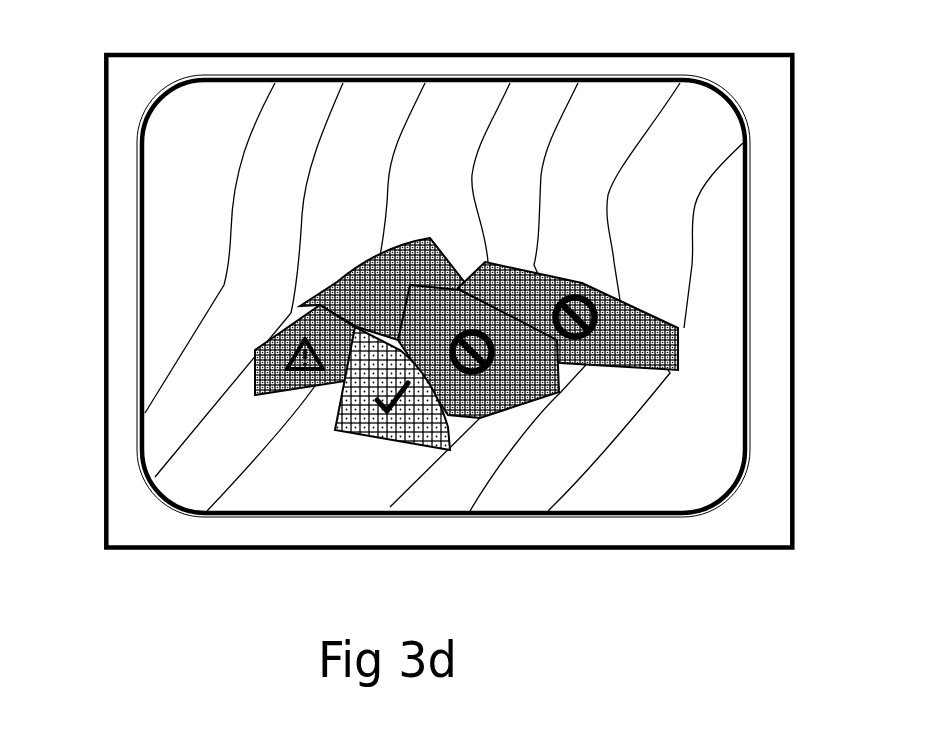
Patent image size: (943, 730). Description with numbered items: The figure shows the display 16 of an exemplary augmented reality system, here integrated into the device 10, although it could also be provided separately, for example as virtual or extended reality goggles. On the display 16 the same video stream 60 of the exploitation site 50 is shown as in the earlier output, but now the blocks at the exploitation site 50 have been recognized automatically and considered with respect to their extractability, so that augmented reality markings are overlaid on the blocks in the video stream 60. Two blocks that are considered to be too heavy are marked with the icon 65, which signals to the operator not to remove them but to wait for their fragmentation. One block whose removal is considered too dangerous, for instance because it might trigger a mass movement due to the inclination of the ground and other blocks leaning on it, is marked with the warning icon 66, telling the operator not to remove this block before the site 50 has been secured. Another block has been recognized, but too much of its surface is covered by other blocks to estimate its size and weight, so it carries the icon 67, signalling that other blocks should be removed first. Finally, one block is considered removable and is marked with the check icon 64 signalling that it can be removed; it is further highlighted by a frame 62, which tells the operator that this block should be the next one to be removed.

The device 10 is at (738, 13).
The display 16 is at (203, 76).
The exploitation site 50 is at (537, 412).
The video stream 60 is at (168, 190).
The frame 62 is at (378, 450).
The check mark indicator 64 is at (398, 417).
The icon 65 is at (472, 313).
The warning icon 66 is at (278, 375).
The icon 67 is at (347, 292).